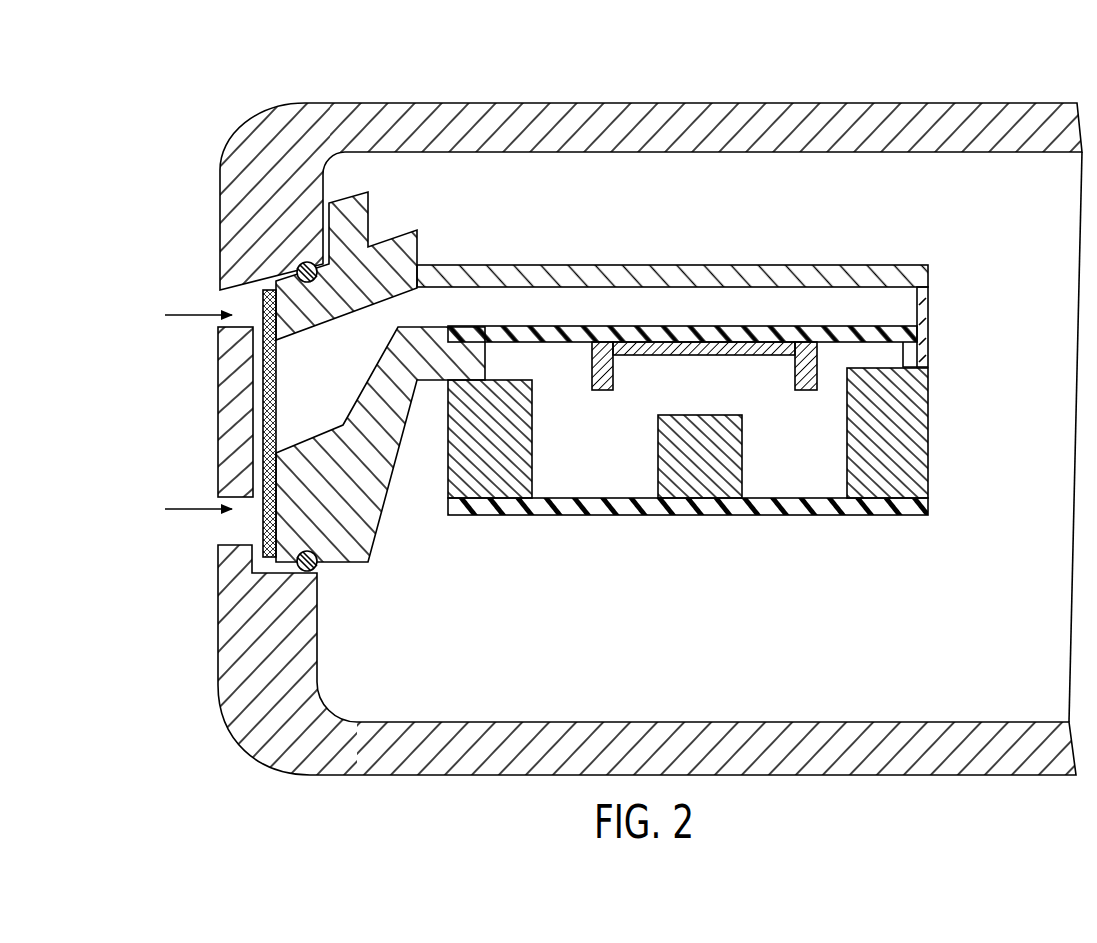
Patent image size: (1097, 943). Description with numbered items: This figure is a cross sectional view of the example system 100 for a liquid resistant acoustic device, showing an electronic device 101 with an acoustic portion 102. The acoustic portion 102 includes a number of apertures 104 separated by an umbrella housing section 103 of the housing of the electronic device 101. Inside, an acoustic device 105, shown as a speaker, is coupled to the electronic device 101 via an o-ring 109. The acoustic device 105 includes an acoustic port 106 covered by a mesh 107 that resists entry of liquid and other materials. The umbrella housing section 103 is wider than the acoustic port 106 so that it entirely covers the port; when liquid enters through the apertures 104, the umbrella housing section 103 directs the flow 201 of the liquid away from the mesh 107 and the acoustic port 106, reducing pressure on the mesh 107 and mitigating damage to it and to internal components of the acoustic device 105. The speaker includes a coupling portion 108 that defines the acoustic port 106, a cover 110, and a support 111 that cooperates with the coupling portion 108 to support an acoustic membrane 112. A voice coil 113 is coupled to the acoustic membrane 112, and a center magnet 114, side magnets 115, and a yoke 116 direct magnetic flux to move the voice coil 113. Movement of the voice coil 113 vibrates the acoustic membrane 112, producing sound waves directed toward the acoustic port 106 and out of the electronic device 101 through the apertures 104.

The system 100 is at (741, 77).
The electronic device 101 is at (770, 735).
The acoustic portion 102 is at (163, 488).
The umbrella housing section 103 is at (230, 420).
The apertures 104 is at (230, 298).
The acoustic device 105 is at (690, 575).
The acoustic port 106 is at (387, 315).
The mesh 107 is at (277, 382).
The coupling portion 108 is at (397, 245).
The o-ring 109 is at (308, 283).
The cover 110 is at (726, 270).
The support 111 is at (923, 317).
The acoustic membrane 112 is at (822, 332).
The voice coil 113 is at (757, 348).
The center magnet 114 is at (735, 455).
The side magnets 115 is at (520, 455).
The yoke 116 is at (928, 505).
The flow 201 is at (185, 318).